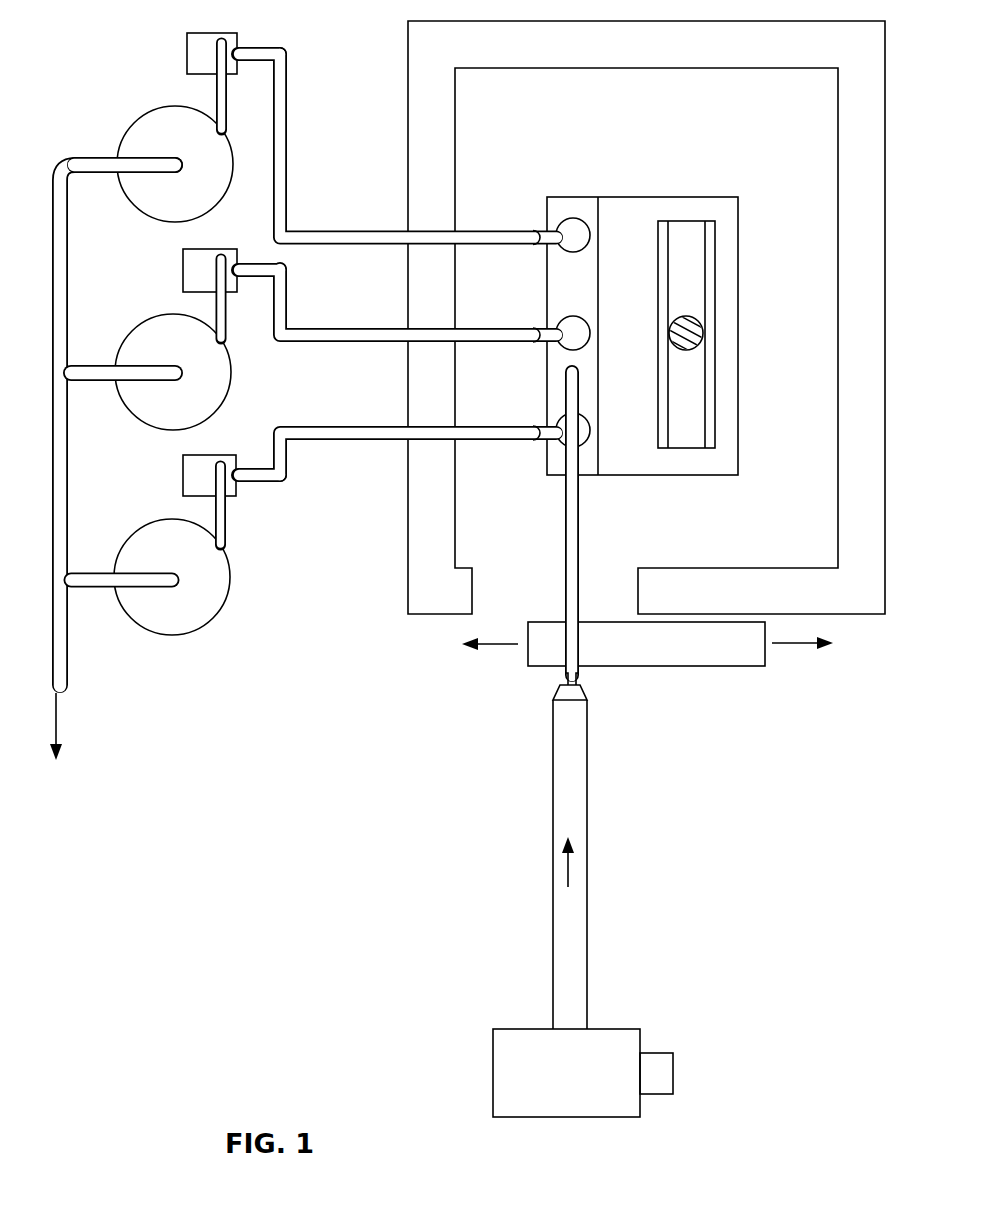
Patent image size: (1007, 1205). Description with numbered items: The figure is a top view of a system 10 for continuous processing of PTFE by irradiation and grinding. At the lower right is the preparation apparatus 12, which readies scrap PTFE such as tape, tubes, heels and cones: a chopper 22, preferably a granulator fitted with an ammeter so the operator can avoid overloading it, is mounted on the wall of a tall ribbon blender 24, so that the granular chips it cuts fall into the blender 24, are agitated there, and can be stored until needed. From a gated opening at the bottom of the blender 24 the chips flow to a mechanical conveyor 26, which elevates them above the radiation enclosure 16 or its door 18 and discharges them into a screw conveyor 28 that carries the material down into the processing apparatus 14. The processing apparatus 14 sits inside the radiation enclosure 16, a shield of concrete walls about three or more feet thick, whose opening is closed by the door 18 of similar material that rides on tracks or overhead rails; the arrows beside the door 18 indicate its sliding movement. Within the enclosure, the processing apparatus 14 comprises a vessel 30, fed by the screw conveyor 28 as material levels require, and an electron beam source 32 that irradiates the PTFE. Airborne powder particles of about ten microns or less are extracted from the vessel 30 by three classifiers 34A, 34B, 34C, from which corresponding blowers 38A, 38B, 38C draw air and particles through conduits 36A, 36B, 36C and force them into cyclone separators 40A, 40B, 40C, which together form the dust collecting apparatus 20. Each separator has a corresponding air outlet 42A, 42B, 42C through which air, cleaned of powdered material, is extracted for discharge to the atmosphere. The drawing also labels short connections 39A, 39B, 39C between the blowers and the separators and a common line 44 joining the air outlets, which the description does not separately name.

The system 10 is at (297, 768).
The preparation apparatus 12 is at (643, 976).
The processing apparatus 14 is at (659, 489).
The radiation enclosure 16 is at (407, 595).
The door 18 is at (700, 652).
The dust collecting apparatus 20 is at (262, 521).
The chopper 22 is at (673, 1072).
The ribbon blender 24 is at (518, 1029).
The mechanical conveyor 26 is at (553, 923).
The screw conveyor 28 is at (569, 676).
The vessel 30 is at (720, 457).
The electron beam source 32 is at (690, 383).
The classifier 34A is at (560, 222).
The classifier 34B is at (558, 318).
The classifier 34C is at (562, 445).
The conduit 36A is at (373, 228).
The conduit 36B is at (373, 327).
The conduit 36C is at (373, 427).
The blower 38A is at (238, 39).
The blower 38B is at (229, 293).
The blower 38C is at (238, 487).
The valve inlet tube 39A is at (217, 97).
The valve inlet tube 39B is at (213, 310).
The valve inlet tube 39C is at (222, 527).
The cyclone separator 40A is at (130, 205).
The cyclone separator 40B is at (132, 418).
The cyclone separator 40C is at (212, 620).
The air outlet 42A is at (95, 155).
The air outlet 42B is at (102, 363).
The air outlet 42C is at (82, 572).
The manifold line 44 is at (65, 640).